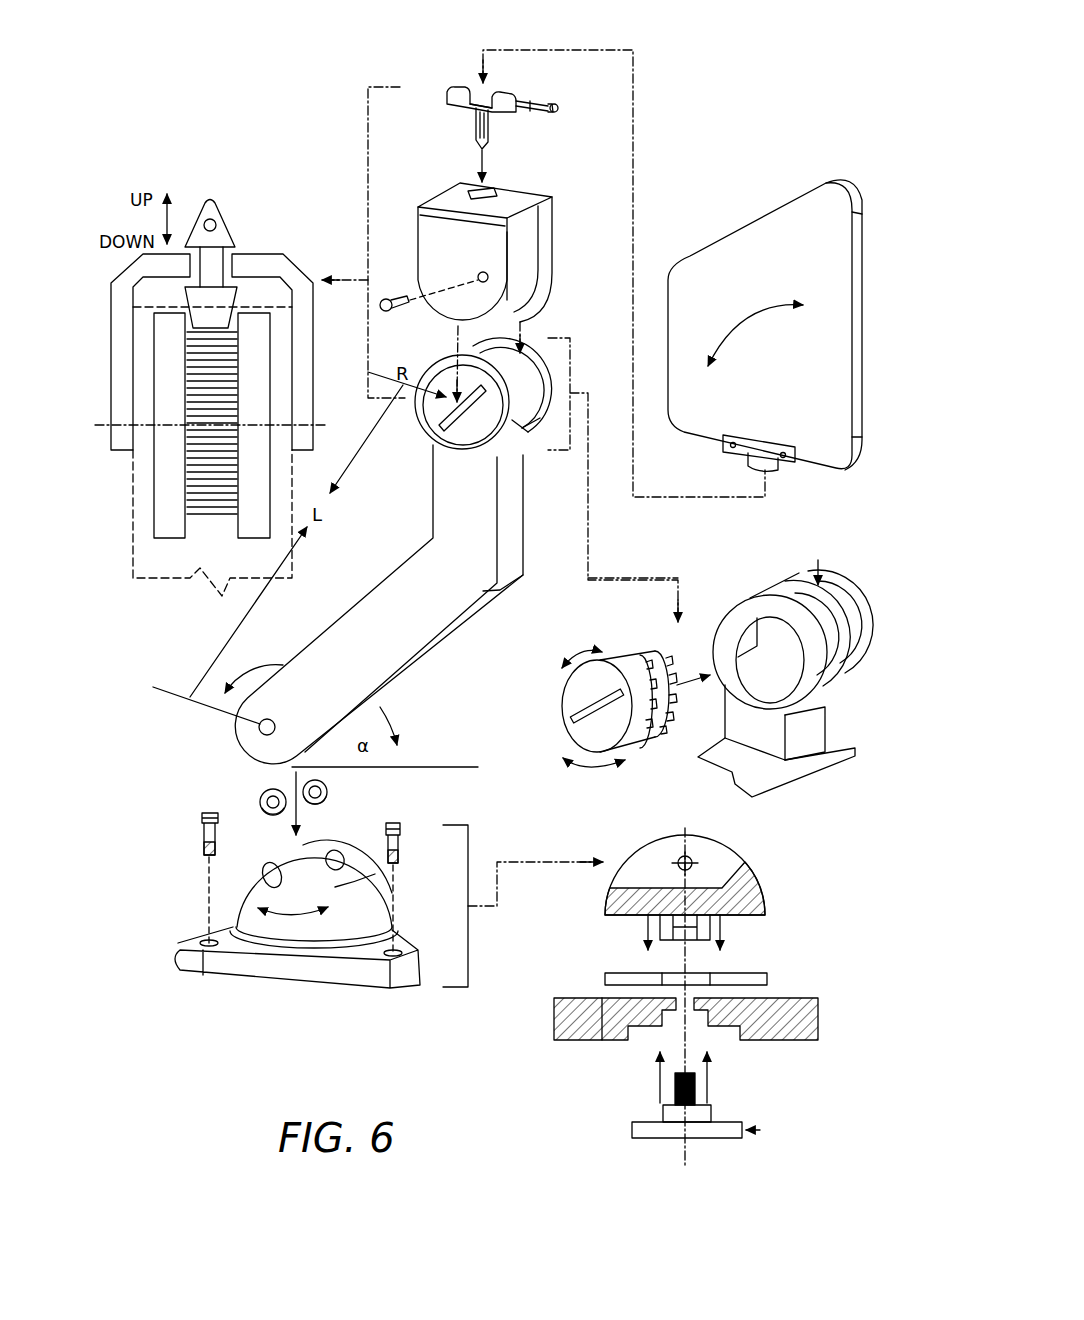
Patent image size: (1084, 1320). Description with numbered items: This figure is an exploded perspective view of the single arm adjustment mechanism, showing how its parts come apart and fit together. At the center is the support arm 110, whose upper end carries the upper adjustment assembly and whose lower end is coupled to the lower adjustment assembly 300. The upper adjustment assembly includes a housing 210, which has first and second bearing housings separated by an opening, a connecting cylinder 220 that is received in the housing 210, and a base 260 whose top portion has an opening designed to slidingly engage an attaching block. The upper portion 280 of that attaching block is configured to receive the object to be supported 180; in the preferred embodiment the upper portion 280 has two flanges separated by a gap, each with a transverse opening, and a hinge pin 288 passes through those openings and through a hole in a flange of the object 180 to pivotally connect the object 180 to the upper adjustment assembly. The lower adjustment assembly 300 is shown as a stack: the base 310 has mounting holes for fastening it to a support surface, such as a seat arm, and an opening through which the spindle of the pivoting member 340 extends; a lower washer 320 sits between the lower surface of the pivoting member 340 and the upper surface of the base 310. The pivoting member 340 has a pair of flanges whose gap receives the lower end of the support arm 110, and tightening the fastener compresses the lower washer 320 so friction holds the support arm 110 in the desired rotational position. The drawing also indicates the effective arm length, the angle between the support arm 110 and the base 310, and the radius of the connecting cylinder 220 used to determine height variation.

The support arm 110 is at (130, 543).
The object to be supported 180 is at (738, 216).
The housing 210 is at (819, 578).
The connecting cylinder 220 is at (609, 645).
The base 260 is at (522, 192).
The upper portion 280 is at (234, 222).
The hinge pin 288 is at (537, 100).
The lower adjustment assembly 300 is at (280, 852).
The base 310 is at (804, 1019).
The lower washer 320 is at (754, 972).
The pivoting member 340 is at (685, 879).